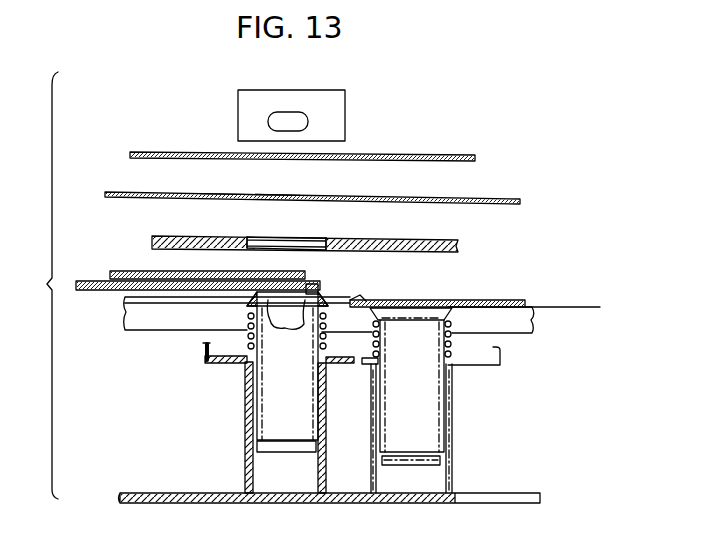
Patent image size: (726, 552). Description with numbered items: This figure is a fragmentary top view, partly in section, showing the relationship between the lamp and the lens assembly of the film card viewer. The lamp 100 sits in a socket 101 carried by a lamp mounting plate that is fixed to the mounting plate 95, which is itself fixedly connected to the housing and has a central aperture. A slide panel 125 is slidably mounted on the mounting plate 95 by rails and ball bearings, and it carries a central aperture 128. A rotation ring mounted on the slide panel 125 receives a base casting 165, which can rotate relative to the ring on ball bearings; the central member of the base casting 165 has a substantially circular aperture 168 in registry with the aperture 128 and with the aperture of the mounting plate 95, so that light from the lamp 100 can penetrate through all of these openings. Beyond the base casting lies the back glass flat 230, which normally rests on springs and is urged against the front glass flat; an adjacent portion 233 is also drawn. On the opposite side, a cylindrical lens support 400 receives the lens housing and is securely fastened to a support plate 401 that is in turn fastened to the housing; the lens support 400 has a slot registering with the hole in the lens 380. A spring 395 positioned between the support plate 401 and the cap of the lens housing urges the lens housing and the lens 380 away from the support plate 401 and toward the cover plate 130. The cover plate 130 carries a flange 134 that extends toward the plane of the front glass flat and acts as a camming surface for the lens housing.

The socket 101 is at (248, 95).
The lamp 100 is at (280, 119).
The mounting plate 95 is at (188, 155).
The slide panel 125 is at (137, 195).
The central aperture 128 is at (233, 197).
The base casting 165 is at (462, 247).
The circular aperture 168 is at (318, 237).
The back glass flat 230 is at (127, 271).
The mesh sheet 233 is at (102, 285).
The cover plate 130 is at (520, 299).
The flange 134 is at (358, 301).
The lens 380 is at (270, 390).
The spring 395 is at (250, 312).
The cylindrical lens support 400 is at (247, 425).
The support plate 401 is at (222, 363).